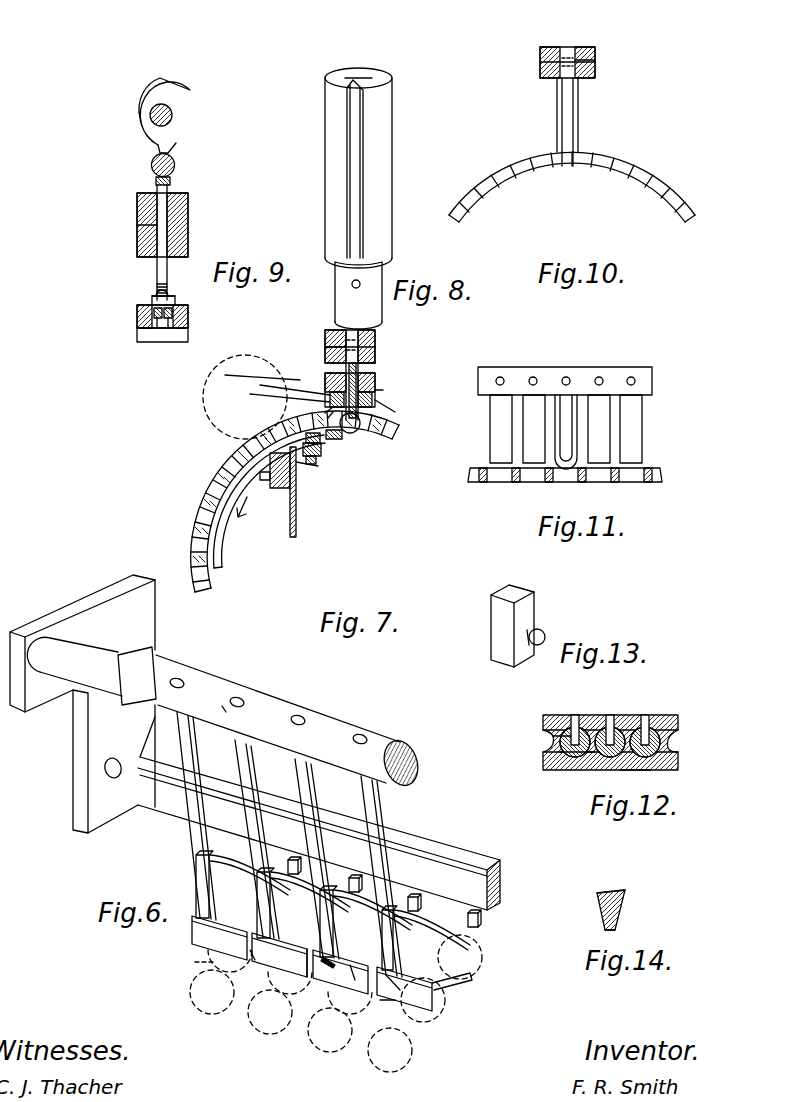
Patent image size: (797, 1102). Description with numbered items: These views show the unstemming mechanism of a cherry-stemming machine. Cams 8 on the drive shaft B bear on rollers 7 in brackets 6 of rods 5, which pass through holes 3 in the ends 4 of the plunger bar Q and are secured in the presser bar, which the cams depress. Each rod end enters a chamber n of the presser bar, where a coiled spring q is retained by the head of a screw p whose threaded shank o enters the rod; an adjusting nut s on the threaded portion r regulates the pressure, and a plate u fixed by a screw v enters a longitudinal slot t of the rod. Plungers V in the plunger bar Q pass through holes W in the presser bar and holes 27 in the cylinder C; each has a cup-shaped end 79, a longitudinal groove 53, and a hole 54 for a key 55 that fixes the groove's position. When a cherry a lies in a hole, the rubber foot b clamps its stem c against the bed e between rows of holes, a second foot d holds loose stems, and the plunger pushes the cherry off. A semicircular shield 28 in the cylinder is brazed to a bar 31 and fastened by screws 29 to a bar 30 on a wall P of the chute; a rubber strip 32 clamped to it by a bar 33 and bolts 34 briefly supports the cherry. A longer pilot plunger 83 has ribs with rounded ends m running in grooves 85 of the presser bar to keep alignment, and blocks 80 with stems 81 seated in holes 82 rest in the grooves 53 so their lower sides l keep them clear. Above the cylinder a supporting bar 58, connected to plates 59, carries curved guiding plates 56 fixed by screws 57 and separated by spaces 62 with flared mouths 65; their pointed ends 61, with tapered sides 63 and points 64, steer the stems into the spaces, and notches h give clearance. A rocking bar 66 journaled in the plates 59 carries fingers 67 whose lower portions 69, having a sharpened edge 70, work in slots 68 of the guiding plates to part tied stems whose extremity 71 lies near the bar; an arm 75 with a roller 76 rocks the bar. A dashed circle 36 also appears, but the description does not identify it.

In FIG. 9, the cams 8 is at (186, 101).
In FIG. 9, the drive shaft B is at (149, 114).
In FIG. 9, the rollers 7 is at (151, 165).
In FIG. 9, the brackets 6 is at (172, 181).
In FIG. 9, the plunger bar Q is at (137, 222).
In FIG. 10, the plunger bar Q is at (560, 47).
In FIG. 11, the plunger bar Q is at (575, 374).
In FIG. 9, the ends of the plunger bar 4 is at (180, 216).
In FIG. 7, the ends of the plunger bar 4 is at (325, 390).
In FIG. 9, the holes 3 is at (137, 243).
In FIG. 9, the rods 5 is at (157, 268).
In FIG. 6, the rods 5 is at (210, 870).
In FIG. 9, the threaded portion r is at (168, 290).
In FIG. 7, the threaded portion r is at (376, 368).
In FIG. 12, the threaded portion r is at (575, 716).
In FIG. 9, the adjusting nut s is at (176, 297).
In FIG. 9, the plate u is at (152, 300).
In FIG. 9, the chamber n is at (145, 318).
In FIG. 9, the coiled spring q is at (140, 336).
In FIG. 7, the coiled spring q is at (325, 340).
In FIG. 9, the screw v is at (189, 312).
In FIG. 9, the longitudinal slot t is at (189, 322).
In FIG. 9, the threaded shank o is at (160, 330).
In FIG. 9, the screw p is at (168, 330).
In FIG. 8, the plungers V is at (378, 163).
In FIG. 7, the plungers V is at (360, 350).
In FIG. 11, the plungers V is at (628, 428).
In FIG. 12, the plungers V is at (553, 740).
In FIG. 8, the longitudinal groove 53 is at (350, 172).
In FIG. 7, the longitudinal groove 53 is at (345, 364).
In FIG. 12, the longitudinal groove 53 is at (660, 742).
In FIG. 8, the cup-shaped ends 79 is at (372, 78).
In FIG. 8, the hole 54 is at (360, 284).
In FIG. 10, the hole 54 is at (595, 64).
In FIG. 10, the key 55 is at (545, 60).
In FIG. 7, the key 55 is at (325, 355).
In FIG. 11, the key 55 is at (533, 378).
In FIG. 10, the point 64 is at (566, 106).
In FIG. 11, the point 64 is at (566, 432).
In FIG. 12, the point 64 is at (588, 770).
In FIG. 6, the point 64 is at (255, 958).
In FIG. 10, the tapered sides 63 is at (576, 126).
In FIG. 11, the tapered sides 63 is at (566, 410).
In FIG. 6, the tapered sides 63 is at (400, 1000).
In FIG. 10, the cylinder C is at (545, 175).
In FIG. 7, the cylinder C is at (232, 480).
In FIG. 11, the cylinder C is at (535, 476).
In FIG. 10, the holes 27 is at (650, 192).
In FIG. 7, the holes 27 is at (198, 590).
In FIG. 11, the holes 27 is at (632, 476).
In FIG. 6, the holes 27 is at (330, 1042).
In FIG. 10, the rounded ends m is at (578, 168).
In FIG. 7, the foot d is at (384, 392).
In FIG. 7, the lower sides of the blocks l is at (396, 413).
In FIG. 7, the cherry a is at (361, 428).
In FIG. 7, the foot b is at (325, 410).
In FIG. 7, the stem c is at (330, 416).
In FIG. 7, the shield 28 is at (228, 530).
In FIG. 7, the screws 29 is at (278, 490).
In FIG. 7, the wall of the chute P is at (297, 522).
In FIG. 7, the bolts 34 is at (321, 452).
In FIG. 7, the bar 33 is at (320, 440).
In FIG. 7, the rubber strip 32 is at (342, 437).
In FIG. 7, the bar 31 is at (312, 464).
In FIG. 7, the bar 30 is at (320, 467).
In FIG. 7, the circle 36 is at (210, 417).
In FIG. 7, the blocks 80 is at (345, 378).
In FIG. 13, the blocks 80 is at (525, 612).
In FIG. 12, the blocks 80 is at (678, 718).
In FIG. 7, the holes 82 is at (250, 394).
In FIG. 12, the holes 82 is at (610, 716).
In FIG. 13, the stem 81 is at (540, 632).
In FIG. 12, the stem 81 is at (543, 720).
In FIG. 12, the holes W is at (560, 770).
In FIG. 12, the pilot plunger 83 is at (645, 716).
In FIG. 12, the grooves 85 is at (630, 770).
In FIG. 14, the lower portion of the finger 69 is at (620, 900).
In FIG. 6, the lower portion of the finger 69 is at (272, 875).
In FIG. 14, the fingers 67 is at (615, 890).
In FIG. 6, the fingers 67 is at (362, 787).
In FIG. 14, the sharpened edge 70 is at (614, 928).
In FIG. 6, the sharpened edge 70 is at (356, 982).
In FIG. 6, the plates 59 is at (82, 704).
In FIG. 6, the rocking bar 66 is at (328, 730).
In FIG. 6, the roller 76 is at (226, 712).
In FIG. 6, the spaces 62 is at (425, 902).
In FIG. 6, the notches h is at (302, 852).
In FIG. 6, the longitudinal slots 68 is at (330, 905).
In FIG. 6, the screws 57 is at (472, 915).
In FIG. 6, the supporting bar 58 is at (420, 858).
In FIG. 6, the arm 75 is at (200, 790).
In FIG. 6, the flared mouth 65 is at (295, 958).
In FIG. 6, the extremity of the tied stems 71 is at (352, 978).
In FIG. 6, the pointed ends 61 is at (380, 1002).
In FIG. 6, the guiding plates 56 is at (445, 975).
In FIG. 6, the bed e is at (195, 962).